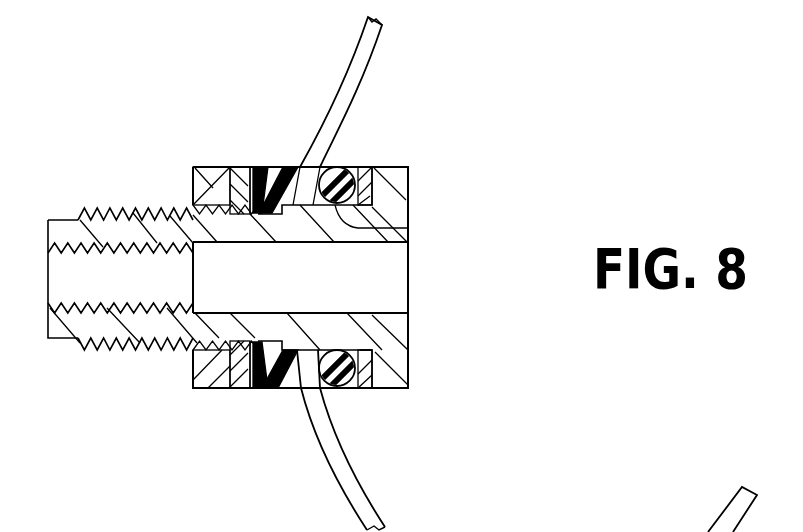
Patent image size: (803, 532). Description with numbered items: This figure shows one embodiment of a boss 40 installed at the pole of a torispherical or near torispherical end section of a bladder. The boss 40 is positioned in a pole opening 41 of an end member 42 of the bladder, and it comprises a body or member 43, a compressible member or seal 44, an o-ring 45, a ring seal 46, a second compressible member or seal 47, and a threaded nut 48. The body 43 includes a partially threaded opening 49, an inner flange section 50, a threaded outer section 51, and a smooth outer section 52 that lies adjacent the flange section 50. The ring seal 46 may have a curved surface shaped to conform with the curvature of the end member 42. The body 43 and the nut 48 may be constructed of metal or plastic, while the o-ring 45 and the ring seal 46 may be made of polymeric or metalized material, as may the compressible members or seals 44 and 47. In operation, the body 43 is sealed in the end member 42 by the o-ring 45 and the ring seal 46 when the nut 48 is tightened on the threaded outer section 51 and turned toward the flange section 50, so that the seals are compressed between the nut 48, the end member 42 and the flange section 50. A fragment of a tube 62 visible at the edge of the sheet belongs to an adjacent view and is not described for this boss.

The boss 40 is at (150, 90).
The pole opening 41 is at (302, 392).
The end member 42 is at (328, 111).
The body 43 is at (55, 248).
The compressible member or seal 44 is at (363, 167).
The o-ring 45 is at (341, 167).
The ring seal 46 is at (283, 167).
The compressible member or seal 47 is at (242, 167).
The threaded nut 48 is at (218, 167).
The partially threaded opening 49 is at (67, 307).
The inner flange section 50 is at (408, 178).
The threaded outer section 51 is at (152, 347).
The smooth outer section 52 is at (403, 230).
The tube 62 is at (692, 531).